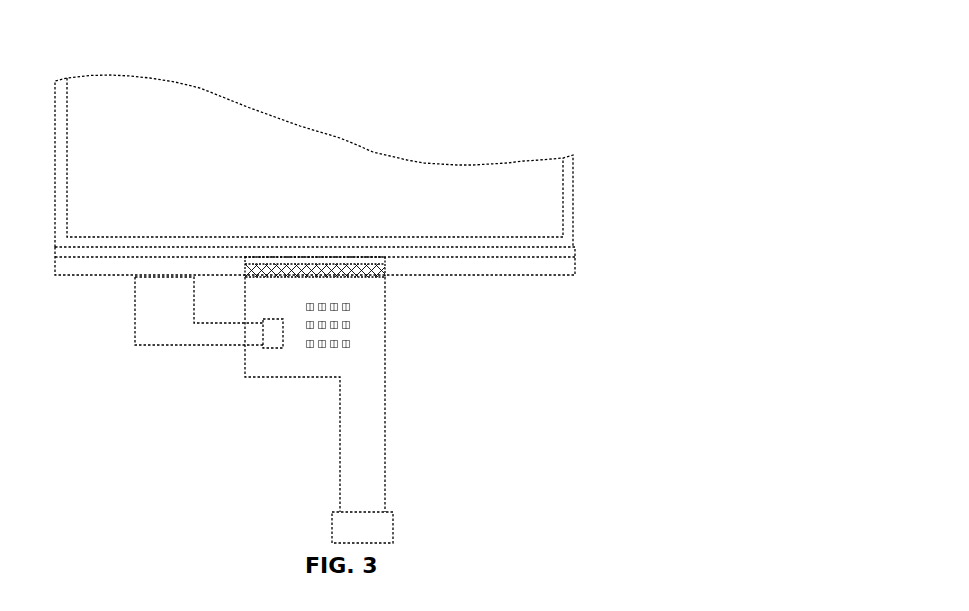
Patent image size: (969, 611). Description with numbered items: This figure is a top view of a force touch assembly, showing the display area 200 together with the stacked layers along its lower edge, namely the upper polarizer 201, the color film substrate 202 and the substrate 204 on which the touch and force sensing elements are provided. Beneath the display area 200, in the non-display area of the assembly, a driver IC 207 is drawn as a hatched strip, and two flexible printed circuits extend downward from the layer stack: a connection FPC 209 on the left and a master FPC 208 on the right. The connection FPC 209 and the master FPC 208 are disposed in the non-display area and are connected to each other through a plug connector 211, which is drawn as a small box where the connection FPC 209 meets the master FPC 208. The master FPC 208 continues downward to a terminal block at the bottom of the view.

The display area 200 is at (540, 202).
The upper polarizer 201 is at (566, 243).
The color film substrate 202 is at (566, 254).
The substrate 204 is at (564, 270).
The driver IC 207 is at (383, 260).
The master FPC 208 is at (380, 377).
The connection FPC 209 is at (150, 308).
The plug connector 211 is at (278, 338).